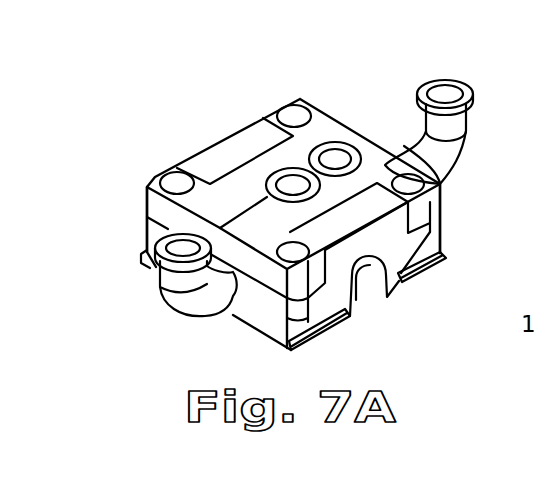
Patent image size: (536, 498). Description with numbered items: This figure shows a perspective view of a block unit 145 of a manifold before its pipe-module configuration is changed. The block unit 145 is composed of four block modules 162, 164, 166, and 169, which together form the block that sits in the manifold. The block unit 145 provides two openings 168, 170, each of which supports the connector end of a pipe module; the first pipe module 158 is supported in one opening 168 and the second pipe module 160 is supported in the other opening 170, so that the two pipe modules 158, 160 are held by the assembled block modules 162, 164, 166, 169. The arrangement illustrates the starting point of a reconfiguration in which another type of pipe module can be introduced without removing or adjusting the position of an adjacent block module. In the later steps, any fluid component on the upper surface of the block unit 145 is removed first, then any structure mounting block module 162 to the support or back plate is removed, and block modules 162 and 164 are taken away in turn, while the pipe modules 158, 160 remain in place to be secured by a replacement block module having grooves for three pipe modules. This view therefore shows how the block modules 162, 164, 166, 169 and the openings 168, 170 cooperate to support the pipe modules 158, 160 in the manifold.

The block unit 145 is at (328, 96).
The pipe module 158 is at (470, 131).
The pipe module 160 is at (168, 303).
The block module 162 is at (390, 297).
The block module 164 is at (378, 142).
The block module 166 is at (147, 201).
The opening 168 is at (440, 184).
The block module 169 is at (145, 247).
The opening 170 is at (273, 171).